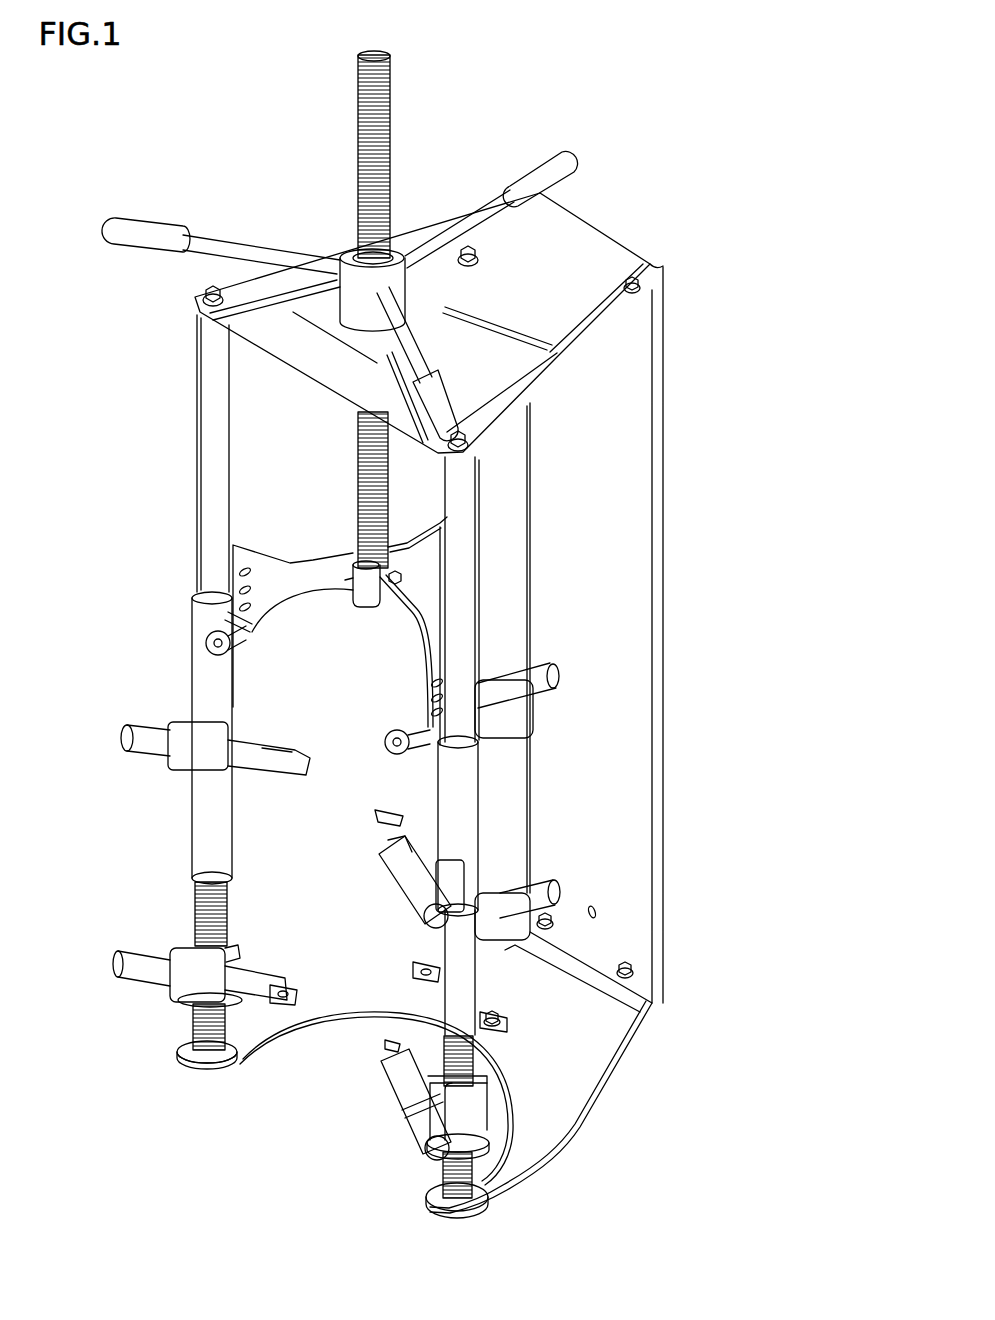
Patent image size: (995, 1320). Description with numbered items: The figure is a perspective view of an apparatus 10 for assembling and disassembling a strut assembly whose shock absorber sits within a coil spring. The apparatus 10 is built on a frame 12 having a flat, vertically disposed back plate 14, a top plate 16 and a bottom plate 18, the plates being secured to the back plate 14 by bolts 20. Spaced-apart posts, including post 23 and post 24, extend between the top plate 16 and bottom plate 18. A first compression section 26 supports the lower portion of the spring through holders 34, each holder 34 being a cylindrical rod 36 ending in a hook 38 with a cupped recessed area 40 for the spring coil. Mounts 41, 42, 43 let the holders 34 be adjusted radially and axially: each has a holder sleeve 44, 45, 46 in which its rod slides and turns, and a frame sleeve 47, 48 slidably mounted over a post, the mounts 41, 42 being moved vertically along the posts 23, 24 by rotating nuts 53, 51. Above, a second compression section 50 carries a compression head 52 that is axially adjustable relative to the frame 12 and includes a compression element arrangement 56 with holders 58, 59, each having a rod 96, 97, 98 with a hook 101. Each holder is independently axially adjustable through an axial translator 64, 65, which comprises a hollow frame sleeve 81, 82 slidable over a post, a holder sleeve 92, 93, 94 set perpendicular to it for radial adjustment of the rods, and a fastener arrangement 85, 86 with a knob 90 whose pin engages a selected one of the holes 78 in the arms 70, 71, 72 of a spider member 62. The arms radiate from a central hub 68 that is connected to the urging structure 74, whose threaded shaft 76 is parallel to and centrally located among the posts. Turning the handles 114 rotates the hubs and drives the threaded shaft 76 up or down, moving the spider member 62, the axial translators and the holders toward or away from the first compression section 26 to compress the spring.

The apparatus 10 is at (633, 153).
The frame 12 is at (752, 368).
The back plate 14 is at (645, 522).
The top plate 16 is at (585, 237).
The bottom plate 18 is at (582, 1120).
The bolts 20 is at (638, 292).
The post 23 is at (203, 445).
The post 24 is at (472, 507).
The first compression section 26 is at (130, 873).
The holders 34 is at (148, 1008).
The rod 36 is at (130, 950).
The hook 38 is at (283, 985).
The cupped recessed areas 40 is at (290, 985).
The mount 41 is at (233, 923).
The mount 42 is at (482, 1088).
The mount 43 is at (503, 905).
The holder sleeve 44 is at (178, 985).
The holder sleeve 45 is at (396, 1095).
The holder sleeve 46 is at (503, 940).
The frame sleeve 47 is at (235, 950).
The frame sleeve 48 is at (470, 1113).
The second compression section 50 is at (150, 414).
The nut 51 is at (482, 1150).
The compression head 52 is at (152, 613).
The nut 53 is at (233, 1007).
The compression element arrangement 56 is at (358, 698).
The holder 58 is at (140, 795).
The holder 59 is at (375, 851).
The spider member 62 is at (308, 467).
The axial translator 64 is at (195, 672).
The axial translator 65 is at (478, 800).
The central hub 68 is at (363, 600).
The arm 70 is at (303, 556).
The arm 71 is at (392, 612).
The arm 72 is at (405, 548).
The urging structure 74 is at (275, 172).
The threaded shaft 76 is at (388, 180).
The holes 78 is at (262, 597).
The frame sleeve 81 is at (233, 697).
The frame sleeve 82 is at (478, 838).
The fastener arrangement 85 is at (212, 606).
The fastener arrangement 86 is at (418, 730).
The knob 90 is at (205, 637).
The holder sleeve 92 is at (187, 762).
The holder sleeve 93 is at (397, 870).
The holder sleeve 94 is at (508, 710).
The rod 96 is at (128, 725).
The rod 97 is at (420, 900).
The rod 98 is at (556, 688).
The hook 101 is at (281, 773).
The handles 114 is at (197, 232).